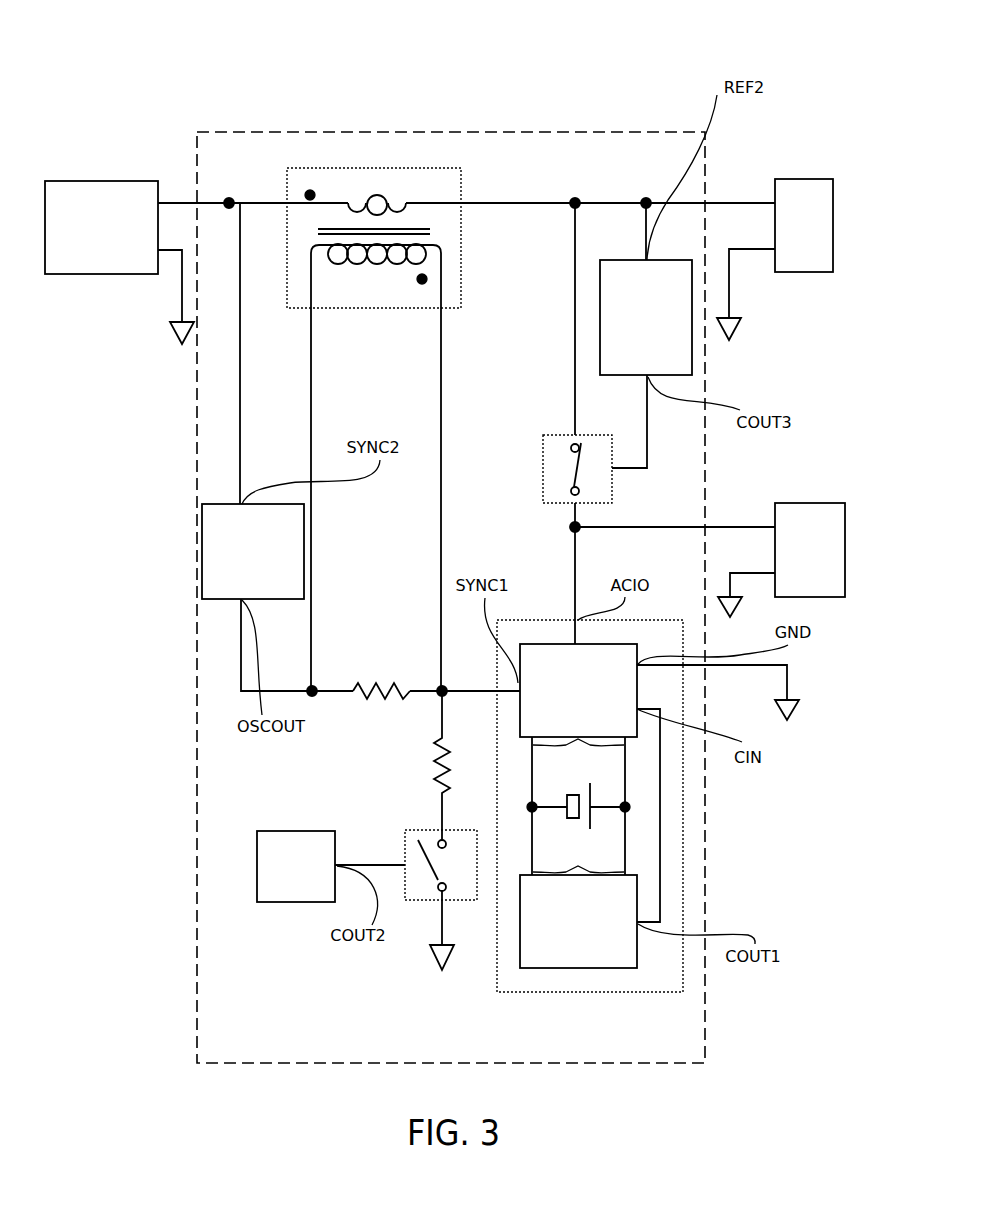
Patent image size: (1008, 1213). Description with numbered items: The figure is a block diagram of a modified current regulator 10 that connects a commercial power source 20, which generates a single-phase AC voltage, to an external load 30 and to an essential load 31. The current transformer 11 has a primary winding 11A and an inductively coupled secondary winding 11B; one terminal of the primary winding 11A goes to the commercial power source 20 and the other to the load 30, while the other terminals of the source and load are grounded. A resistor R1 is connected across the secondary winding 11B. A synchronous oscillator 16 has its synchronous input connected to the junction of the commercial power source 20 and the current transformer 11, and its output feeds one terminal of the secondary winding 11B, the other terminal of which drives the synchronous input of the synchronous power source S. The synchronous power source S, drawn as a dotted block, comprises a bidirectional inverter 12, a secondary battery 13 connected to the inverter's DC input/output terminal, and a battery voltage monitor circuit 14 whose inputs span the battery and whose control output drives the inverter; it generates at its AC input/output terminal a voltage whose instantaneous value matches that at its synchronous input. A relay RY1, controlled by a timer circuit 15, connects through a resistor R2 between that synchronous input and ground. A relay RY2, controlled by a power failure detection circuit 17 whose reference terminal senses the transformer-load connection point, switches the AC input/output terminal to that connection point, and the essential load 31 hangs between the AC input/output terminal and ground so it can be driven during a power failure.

The current regulator 10 is at (548, 131).
The current transformer 11 is at (385, 388).
The primary winding 11A is at (360, 213).
The secondary winding 11B is at (370, 265).
The bidirectional inverter 12 is at (565, 644).
The secondary battery 13 is at (593, 818).
The battery voltage monitor circuit 14 is at (568, 968).
The timer circuit 15 is at (290, 831).
The synchronous oscillator 16 is at (304, 551).
The power failure detection circuit 17 is at (600, 318).
The commercial power source 20 is at (112, 182).
The external load 30 is at (780, 179).
The essential load 31 is at (785, 503).
The resistor R1 is at (356, 686).
The resistor R2 is at (433, 760).
The relay RY1 is at (405, 840).
The relay RY2 is at (555, 435).
The synchronous power source S is at (615, 992).